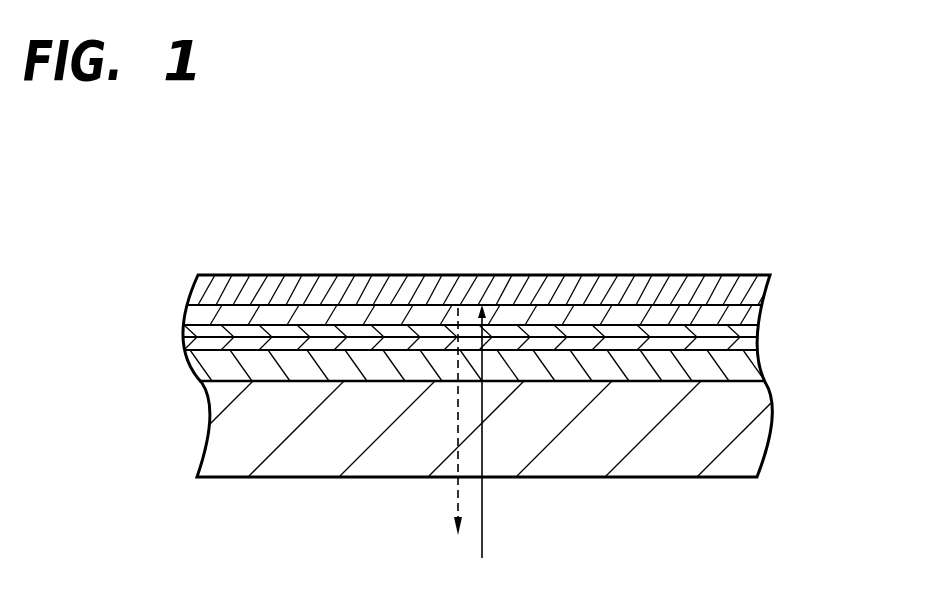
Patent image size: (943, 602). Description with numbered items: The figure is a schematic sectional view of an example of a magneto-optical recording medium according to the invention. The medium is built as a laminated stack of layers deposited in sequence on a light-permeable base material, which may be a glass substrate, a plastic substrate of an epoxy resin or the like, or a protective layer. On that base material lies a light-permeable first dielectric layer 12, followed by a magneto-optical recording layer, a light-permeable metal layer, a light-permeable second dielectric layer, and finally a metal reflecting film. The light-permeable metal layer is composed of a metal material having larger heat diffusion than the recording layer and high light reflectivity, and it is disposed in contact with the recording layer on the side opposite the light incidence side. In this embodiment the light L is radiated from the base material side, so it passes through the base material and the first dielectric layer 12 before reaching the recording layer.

The first dielectric layer 12 is at (767, 372).
The light L is at (483, 503).